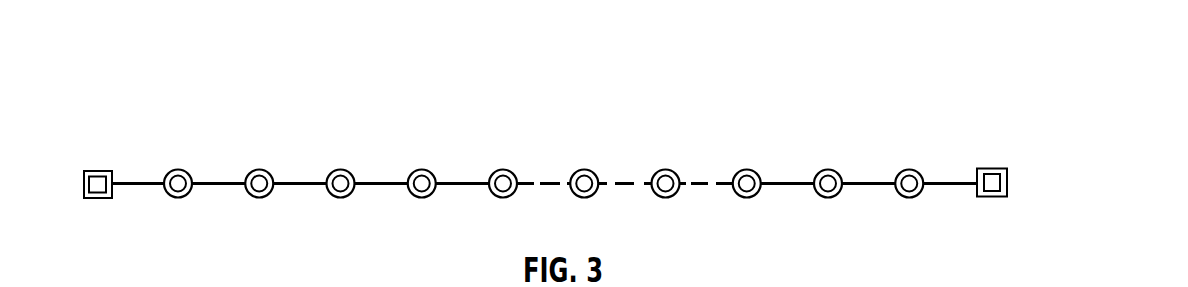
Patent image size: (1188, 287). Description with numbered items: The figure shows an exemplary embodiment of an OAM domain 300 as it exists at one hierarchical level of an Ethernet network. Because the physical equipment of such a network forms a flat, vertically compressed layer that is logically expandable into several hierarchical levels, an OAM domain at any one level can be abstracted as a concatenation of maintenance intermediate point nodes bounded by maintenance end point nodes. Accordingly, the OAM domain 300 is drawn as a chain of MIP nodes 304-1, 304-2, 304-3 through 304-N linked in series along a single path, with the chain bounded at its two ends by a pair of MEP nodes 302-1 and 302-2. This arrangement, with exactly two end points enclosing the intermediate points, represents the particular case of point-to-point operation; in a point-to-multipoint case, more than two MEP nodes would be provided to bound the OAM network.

The OAM domain 300 is at (1048, 104).
The MEP node 302-1 is at (97, 171).
The MEP node 302-2 is at (1008, 183).
The MIP node 304-1 is at (175, 170).
The MIP node 304-2 is at (256, 170).
The MIP node 304-3 is at (337, 170).
The MIP node 304-N is at (912, 170).